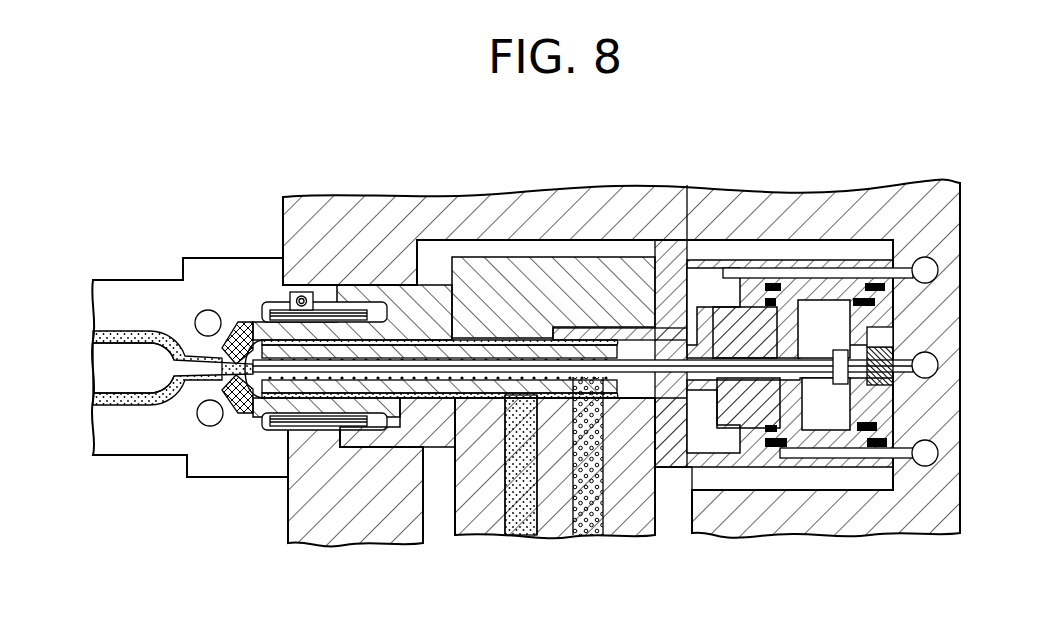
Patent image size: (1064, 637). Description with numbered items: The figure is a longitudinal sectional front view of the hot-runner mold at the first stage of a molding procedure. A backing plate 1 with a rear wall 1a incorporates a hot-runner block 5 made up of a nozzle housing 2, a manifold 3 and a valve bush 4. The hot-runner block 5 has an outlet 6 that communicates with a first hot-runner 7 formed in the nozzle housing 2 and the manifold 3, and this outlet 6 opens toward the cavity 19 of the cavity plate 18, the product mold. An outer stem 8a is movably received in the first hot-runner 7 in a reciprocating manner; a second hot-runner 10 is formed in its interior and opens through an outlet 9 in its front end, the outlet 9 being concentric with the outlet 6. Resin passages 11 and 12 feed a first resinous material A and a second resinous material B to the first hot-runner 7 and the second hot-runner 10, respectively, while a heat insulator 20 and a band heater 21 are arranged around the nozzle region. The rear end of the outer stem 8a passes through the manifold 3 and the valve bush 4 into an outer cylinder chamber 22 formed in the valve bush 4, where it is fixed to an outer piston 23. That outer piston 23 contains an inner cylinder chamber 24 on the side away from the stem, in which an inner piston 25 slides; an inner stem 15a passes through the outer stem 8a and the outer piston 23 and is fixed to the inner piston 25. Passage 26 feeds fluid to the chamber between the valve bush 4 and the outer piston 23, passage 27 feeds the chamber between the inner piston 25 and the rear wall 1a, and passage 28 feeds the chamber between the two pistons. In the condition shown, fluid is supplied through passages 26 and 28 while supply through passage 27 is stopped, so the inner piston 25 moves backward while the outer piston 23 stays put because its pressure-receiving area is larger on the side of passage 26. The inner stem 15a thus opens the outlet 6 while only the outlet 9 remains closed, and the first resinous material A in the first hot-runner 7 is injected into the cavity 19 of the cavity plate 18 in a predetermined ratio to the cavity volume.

The backing plate 1 is at (288, 527).
The rear wall 1a is at (963, 507).
The nozzle housing 2 is at (433, 447).
The manifold 3 is at (666, 517).
The valve bush 4 is at (673, 468).
The hot-runner block 5 is at (450, 528).
The outlet 6 is at (208, 380).
The first hot-runner 7 is at (420, 395).
The outer stem 8a is at (538, 345).
The outlet 9 is at (238, 392).
The second hot-runner 10 is at (493, 360).
The resin passage 11 is at (537, 517).
The resin passage 12 is at (603, 517).
The inner stem 15a is at (637, 377).
The cavity plate 18 is at (159, 285).
The cavity 19 is at (124, 334).
The heat insulator 20 is at (236, 338).
The band heater 21 is at (276, 302).
The outer cylinder chamber 22 is at (700, 296).
The outer piston 23 is at (797, 404).
The inner cylinder chamber 24 is at (833, 298).
The inner piston 25 is at (880, 413).
The passage 26 is at (938, 270).
The passage 27 is at (938, 365).
The passage 28 is at (938, 453).
The first resinous material A is at (514, 492).
The second resinous material B is at (590, 482).